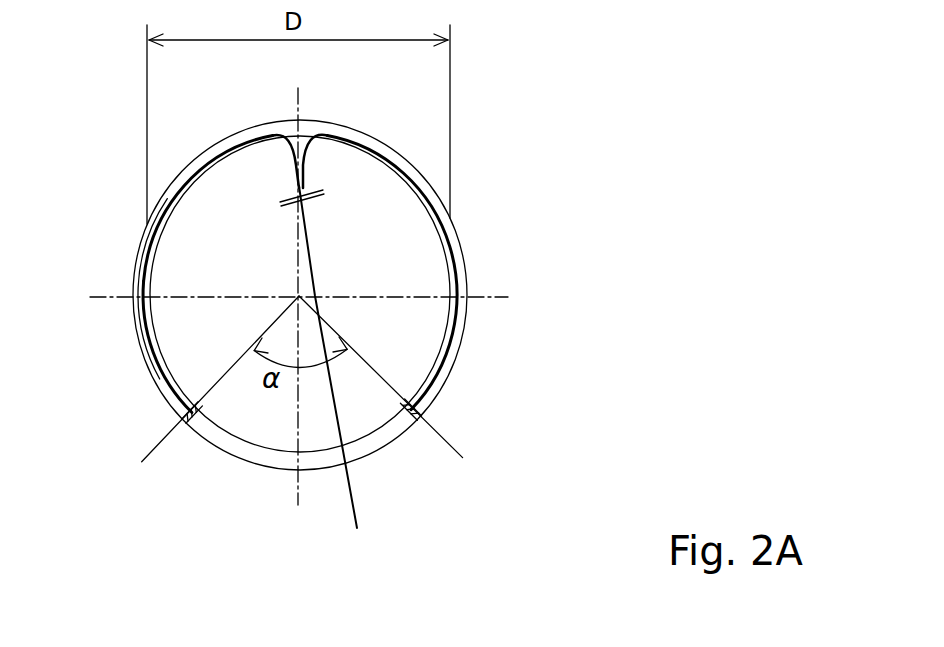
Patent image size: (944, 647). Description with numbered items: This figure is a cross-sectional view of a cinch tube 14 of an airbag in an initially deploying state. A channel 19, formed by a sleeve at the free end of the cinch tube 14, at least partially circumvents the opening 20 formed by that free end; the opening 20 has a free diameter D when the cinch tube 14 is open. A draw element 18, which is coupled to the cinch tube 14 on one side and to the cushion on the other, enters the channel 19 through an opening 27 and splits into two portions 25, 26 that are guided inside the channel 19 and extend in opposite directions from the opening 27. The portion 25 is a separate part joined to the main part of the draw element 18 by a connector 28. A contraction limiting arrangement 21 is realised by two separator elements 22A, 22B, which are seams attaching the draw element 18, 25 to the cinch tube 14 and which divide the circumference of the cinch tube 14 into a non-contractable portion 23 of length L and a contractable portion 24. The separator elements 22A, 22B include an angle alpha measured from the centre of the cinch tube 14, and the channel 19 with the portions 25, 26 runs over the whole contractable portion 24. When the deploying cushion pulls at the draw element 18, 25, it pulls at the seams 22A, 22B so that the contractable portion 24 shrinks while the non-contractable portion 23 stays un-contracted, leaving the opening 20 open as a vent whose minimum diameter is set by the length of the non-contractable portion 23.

The cinch tube 14 is at (458, 367).
The draw element 18 is at (353, 497).
The channel 19 is at (142, 340).
The opening 20 is at (396, 262).
The contraction limiting arrangement 21 is at (172, 445).
The separator element 22A is at (178, 417).
The separator element 22B is at (405, 400).
The non-contractable portion 23 is at (265, 457).
The contractable portion 24 is at (226, 140).
The draw element portion 25 is at (461, 317).
The draw element portion 26 is at (137, 277).
The opening 27 is at (293, 137).
The connector 28 is at (320, 192).